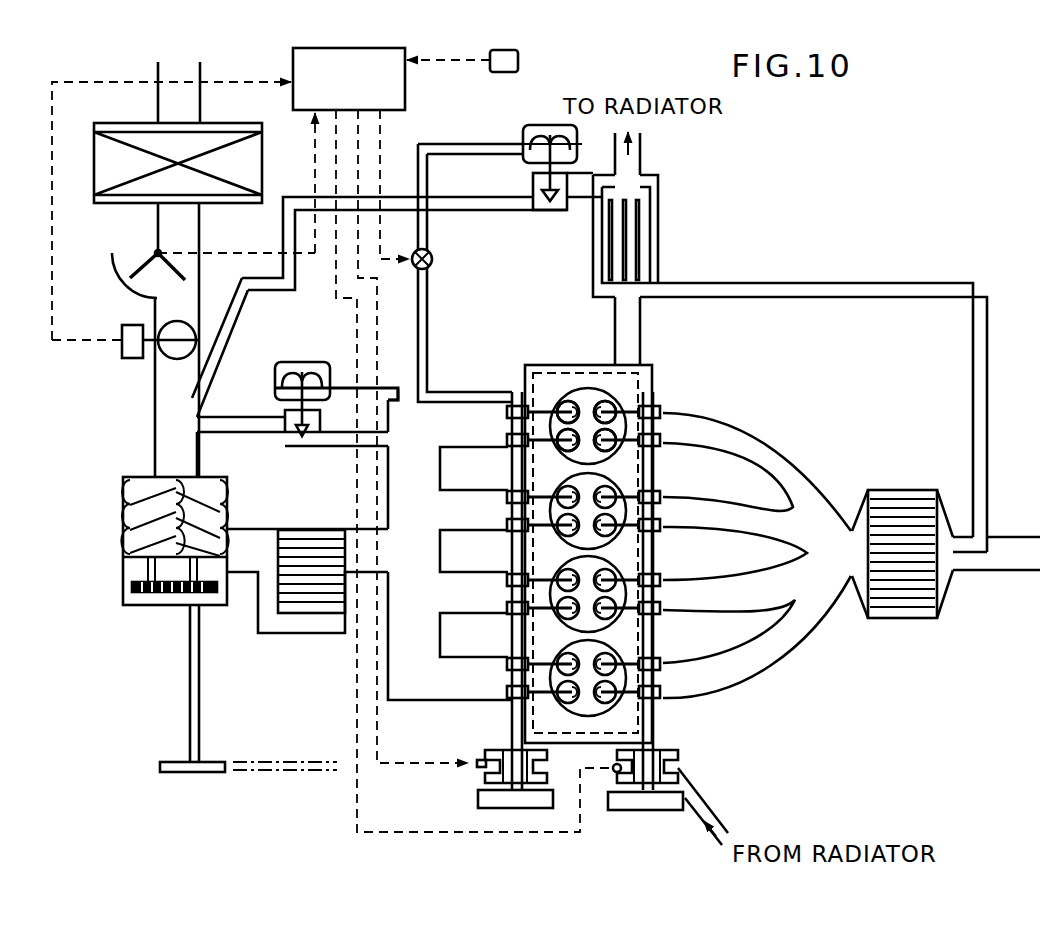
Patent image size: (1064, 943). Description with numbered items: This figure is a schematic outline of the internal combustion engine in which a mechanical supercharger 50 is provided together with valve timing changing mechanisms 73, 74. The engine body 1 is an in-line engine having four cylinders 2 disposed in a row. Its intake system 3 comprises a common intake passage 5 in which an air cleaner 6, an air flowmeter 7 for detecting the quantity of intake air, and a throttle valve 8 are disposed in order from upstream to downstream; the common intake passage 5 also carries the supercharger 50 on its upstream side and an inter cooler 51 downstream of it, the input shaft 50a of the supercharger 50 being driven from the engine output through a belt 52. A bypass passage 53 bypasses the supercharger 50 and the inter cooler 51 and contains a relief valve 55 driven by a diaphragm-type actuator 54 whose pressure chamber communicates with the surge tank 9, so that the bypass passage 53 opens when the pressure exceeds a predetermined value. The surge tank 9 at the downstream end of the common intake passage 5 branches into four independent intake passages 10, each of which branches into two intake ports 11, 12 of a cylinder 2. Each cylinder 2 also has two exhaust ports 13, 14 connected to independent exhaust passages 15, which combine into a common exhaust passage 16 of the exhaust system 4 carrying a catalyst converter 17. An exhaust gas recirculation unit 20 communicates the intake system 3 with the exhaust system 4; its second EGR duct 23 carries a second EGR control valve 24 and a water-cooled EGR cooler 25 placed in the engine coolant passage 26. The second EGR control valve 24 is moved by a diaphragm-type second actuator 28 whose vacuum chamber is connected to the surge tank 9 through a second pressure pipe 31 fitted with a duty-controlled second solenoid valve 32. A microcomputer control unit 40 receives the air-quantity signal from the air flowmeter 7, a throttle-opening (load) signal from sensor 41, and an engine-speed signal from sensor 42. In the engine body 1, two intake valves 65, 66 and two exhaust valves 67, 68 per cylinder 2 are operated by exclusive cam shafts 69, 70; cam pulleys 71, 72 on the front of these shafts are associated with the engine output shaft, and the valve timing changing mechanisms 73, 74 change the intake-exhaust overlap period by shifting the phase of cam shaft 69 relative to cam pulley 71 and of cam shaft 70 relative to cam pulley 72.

The engine body 1 is at (561, 348).
The cylinders 2 is at (584, 388).
The intake system 3 is at (340, 643).
The exhaust system 4 is at (798, 686).
The common intake passage 5 is at (163, 410).
The air cleaner 6 is at (94, 167).
The air flowmeter 7 is at (124, 285).
The throttle valve 8 is at (200, 328).
The surge tank 9 is at (398, 577).
The independent intake passages 10 is at (449, 435).
The intake port 11 is at (532, 378).
The intake port 12 is at (519, 414).
The exhaust port 13 is at (660, 378).
The exhaust port 14 is at (677, 413).
The independent exhaust passage 15 is at (709, 445).
The common exhaust passage 16 is at (997, 567).
The catalyst converter 17 is at (911, 620).
The exhaust gas recirculation unit 20 is at (676, 268).
The second EGR duct 23 is at (828, 281).
The second EGR control valve 24 is at (530, 191).
The EGR cooler 25 is at (659, 225).
The coolant passage 26 is at (640, 156).
The second actuator 28 is at (530, 125).
The second pressure pipe 31 is at (447, 149).
The second solenoid valve 32 is at (429, 254).
The control unit 40 is at (293, 72).
The sensor 41 is at (128, 358).
The sensor 42 is at (495, 72).
The supercharger 50 is at (121, 530).
The input shaft 50a is at (190, 662).
The inter cooler 51 is at (323, 542).
The belt 52 is at (280, 771).
The bypass passage 53 is at (254, 433).
The actuator 54 is at (289, 362).
The relief valve 55 is at (293, 424).
The intake valve 65 is at (560, 400).
The intake valve 66 is at (557, 420).
The exhaust valve 67 is at (616, 402).
The exhaust valve 68 is at (620, 435).
The cam shaft 69 is at (508, 714).
The cam shaft 70 is at (672, 714).
The cam pulley 71 is at (496, 792).
The cam pulley 72 is at (654, 810).
The valve timing changing mechanism 73 is at (466, 777).
The valve timing changing mechanism 74 is at (692, 771).